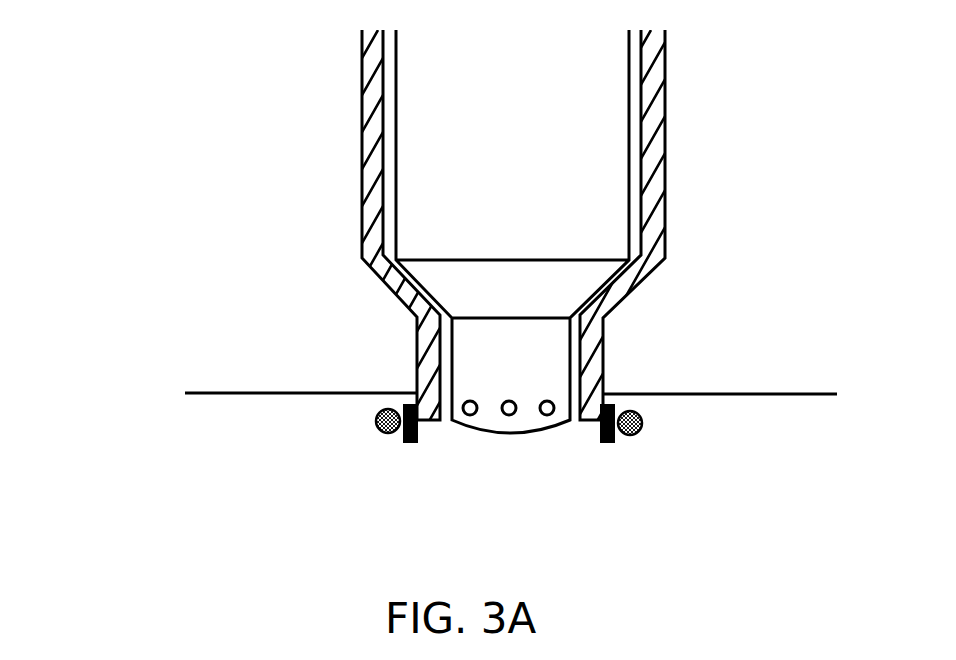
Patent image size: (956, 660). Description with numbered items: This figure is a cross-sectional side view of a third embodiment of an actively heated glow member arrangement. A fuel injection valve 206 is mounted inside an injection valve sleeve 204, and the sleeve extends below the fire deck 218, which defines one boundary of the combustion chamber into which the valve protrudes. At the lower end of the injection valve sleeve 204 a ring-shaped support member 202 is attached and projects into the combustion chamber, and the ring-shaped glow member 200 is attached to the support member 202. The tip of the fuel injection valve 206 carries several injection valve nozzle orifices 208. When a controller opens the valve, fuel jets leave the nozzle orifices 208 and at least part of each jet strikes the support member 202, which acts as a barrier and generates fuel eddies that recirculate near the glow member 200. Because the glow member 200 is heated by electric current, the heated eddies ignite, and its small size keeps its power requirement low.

The glow member 200 is at (638, 432).
The support member 202 is at (410, 443).
The injection valve sleeve 204 is at (377, 150).
The fuel injection valve 206 is at (450, 100).
The injection valve nozzle orifices 208 is at (509, 408).
The fire deck 218 is at (300, 394).